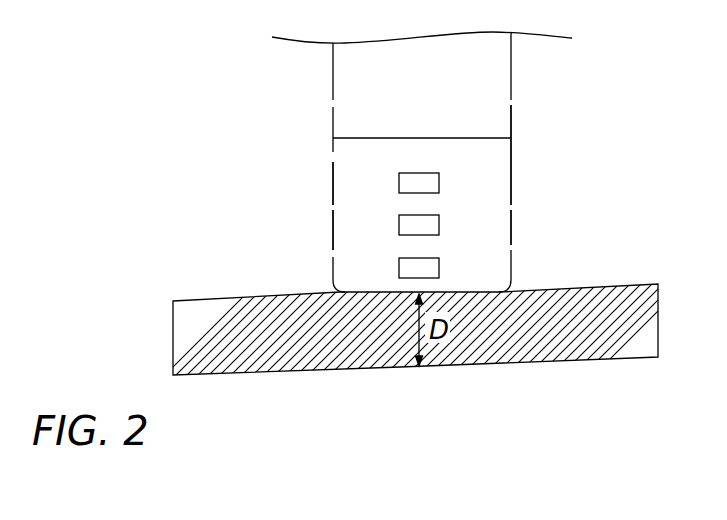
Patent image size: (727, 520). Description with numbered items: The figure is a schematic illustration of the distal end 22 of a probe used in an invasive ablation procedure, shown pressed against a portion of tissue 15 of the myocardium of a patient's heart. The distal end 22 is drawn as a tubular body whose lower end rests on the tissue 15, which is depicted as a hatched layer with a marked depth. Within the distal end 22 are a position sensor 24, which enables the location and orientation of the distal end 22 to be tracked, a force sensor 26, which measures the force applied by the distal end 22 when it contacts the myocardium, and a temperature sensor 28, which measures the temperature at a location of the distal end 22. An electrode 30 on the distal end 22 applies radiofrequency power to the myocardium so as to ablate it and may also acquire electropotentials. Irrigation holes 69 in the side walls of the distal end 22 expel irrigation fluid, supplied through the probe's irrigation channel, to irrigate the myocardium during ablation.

The tissue 15 is at (200, 300).
The distal end 22 is at (512, 68).
The position sensor 24 is at (439, 183).
The force sensor 26 is at (439, 222).
The temperature sensor 28 is at (439, 268).
The electrode 30 is at (338, 148).
The irrigation hole 69 is at (333, 248).